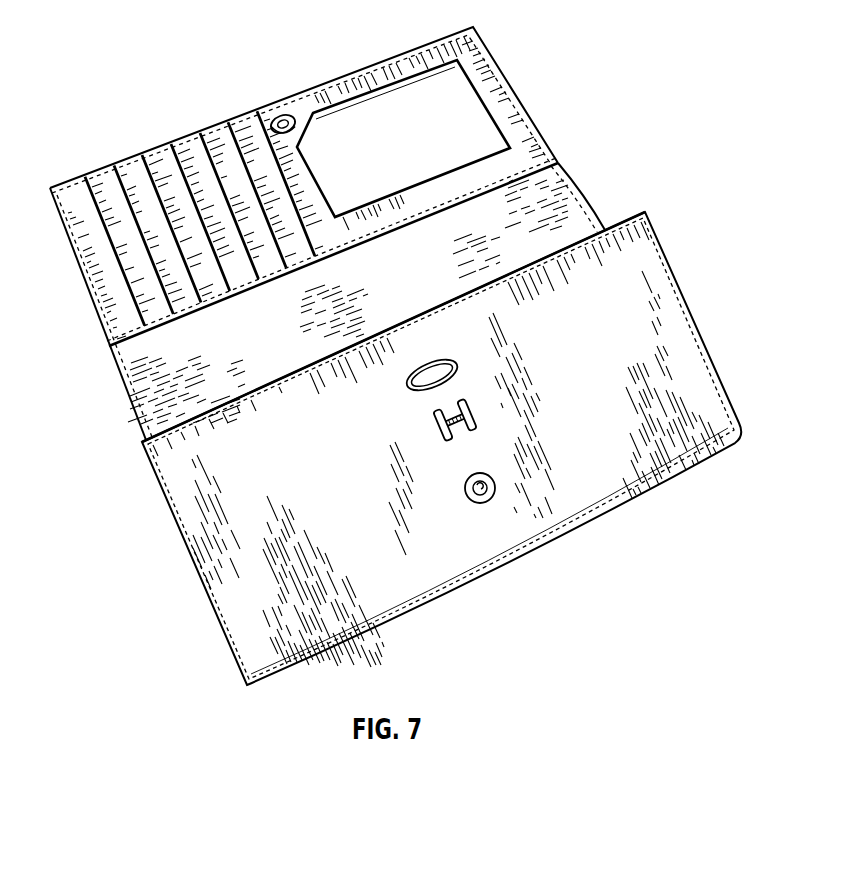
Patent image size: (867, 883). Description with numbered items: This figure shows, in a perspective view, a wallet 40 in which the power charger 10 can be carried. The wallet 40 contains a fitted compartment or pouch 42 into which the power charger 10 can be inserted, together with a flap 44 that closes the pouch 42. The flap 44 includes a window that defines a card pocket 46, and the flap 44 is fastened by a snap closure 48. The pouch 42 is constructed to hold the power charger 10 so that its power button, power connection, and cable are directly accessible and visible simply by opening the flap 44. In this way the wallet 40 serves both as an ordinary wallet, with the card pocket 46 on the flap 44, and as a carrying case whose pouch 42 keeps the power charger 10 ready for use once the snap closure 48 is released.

The power charger 10 is at (395, 356).
The wallet 40 is at (557, 117).
The pouch 42 is at (237, 610).
The flap 44 is at (168, 172).
The card pocket 46 is at (377, 145).
The snap closure 48 is at (277, 112).